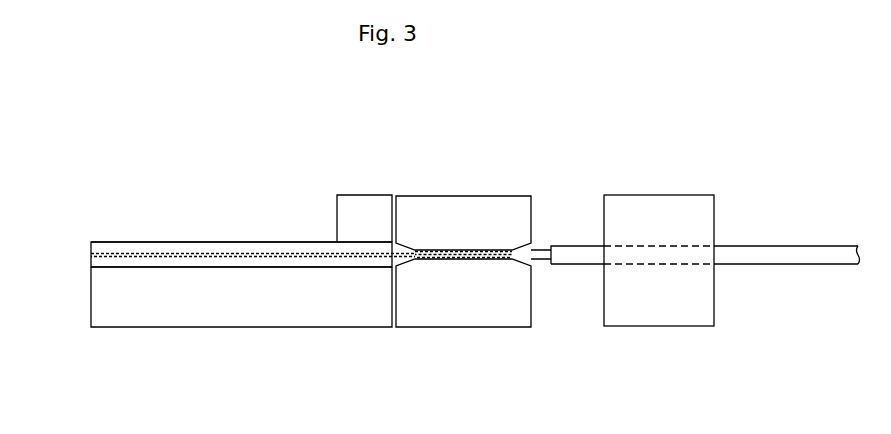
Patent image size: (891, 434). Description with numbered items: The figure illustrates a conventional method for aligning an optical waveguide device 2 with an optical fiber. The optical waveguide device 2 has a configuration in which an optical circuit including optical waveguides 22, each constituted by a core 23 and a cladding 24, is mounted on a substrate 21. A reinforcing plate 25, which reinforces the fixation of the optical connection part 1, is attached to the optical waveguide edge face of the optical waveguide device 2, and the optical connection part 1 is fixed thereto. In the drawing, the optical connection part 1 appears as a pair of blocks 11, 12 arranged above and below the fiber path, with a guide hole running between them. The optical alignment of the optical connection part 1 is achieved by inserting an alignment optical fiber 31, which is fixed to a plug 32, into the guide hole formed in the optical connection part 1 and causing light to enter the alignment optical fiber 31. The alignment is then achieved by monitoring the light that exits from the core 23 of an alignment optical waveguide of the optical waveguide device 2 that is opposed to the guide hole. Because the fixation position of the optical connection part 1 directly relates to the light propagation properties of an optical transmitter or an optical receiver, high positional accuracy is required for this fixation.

The optical connection part 1 is at (463, 249).
The optical waveguide device 2 is at (231, 219).
The lower clamp block 11 is at (462, 328).
The upper clamp block 12 is at (466, 197).
The substrate 21 is at (248, 327).
The optical waveguide 22 is at (90, 268).
The core 23 is at (153, 250).
The cladding 24 is at (208, 248).
The reinforcing plate 25 is at (366, 197).
The alignment optical fiber 31 is at (798, 246).
The plug 32 is at (664, 197).